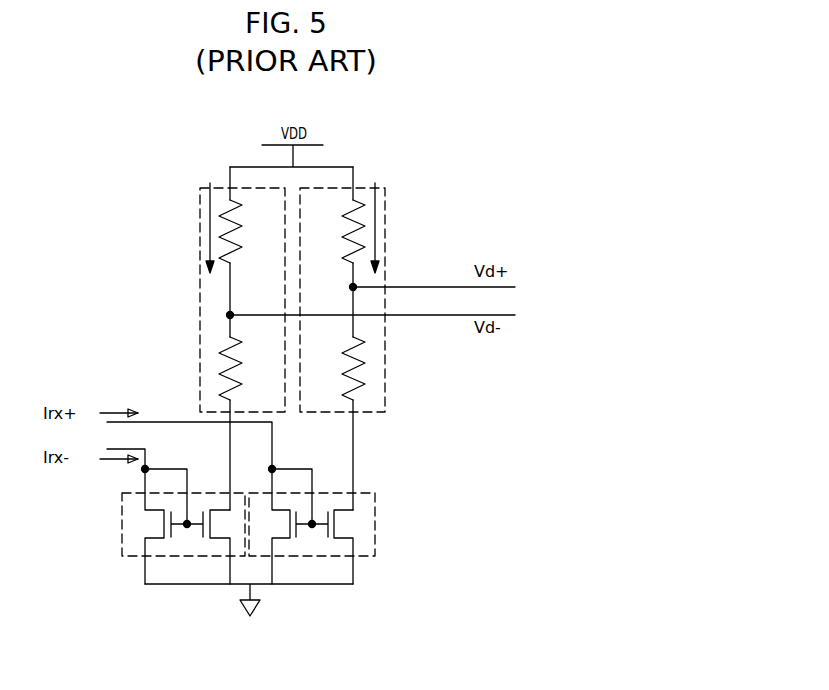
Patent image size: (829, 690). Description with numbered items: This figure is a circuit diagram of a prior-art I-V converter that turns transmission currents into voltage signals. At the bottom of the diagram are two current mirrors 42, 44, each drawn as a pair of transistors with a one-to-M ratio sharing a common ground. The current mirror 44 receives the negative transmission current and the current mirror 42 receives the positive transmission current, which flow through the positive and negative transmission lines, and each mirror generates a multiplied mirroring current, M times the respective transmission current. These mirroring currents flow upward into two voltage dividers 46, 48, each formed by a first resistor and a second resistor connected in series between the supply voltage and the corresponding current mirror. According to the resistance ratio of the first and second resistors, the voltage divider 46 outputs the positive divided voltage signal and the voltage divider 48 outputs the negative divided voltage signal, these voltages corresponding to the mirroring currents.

The current mirror 42 is at (375, 519).
The current mirror 44 is at (122, 519).
The voltage divider 46 is at (385, 371).
The voltage divider 48 is at (200, 371).